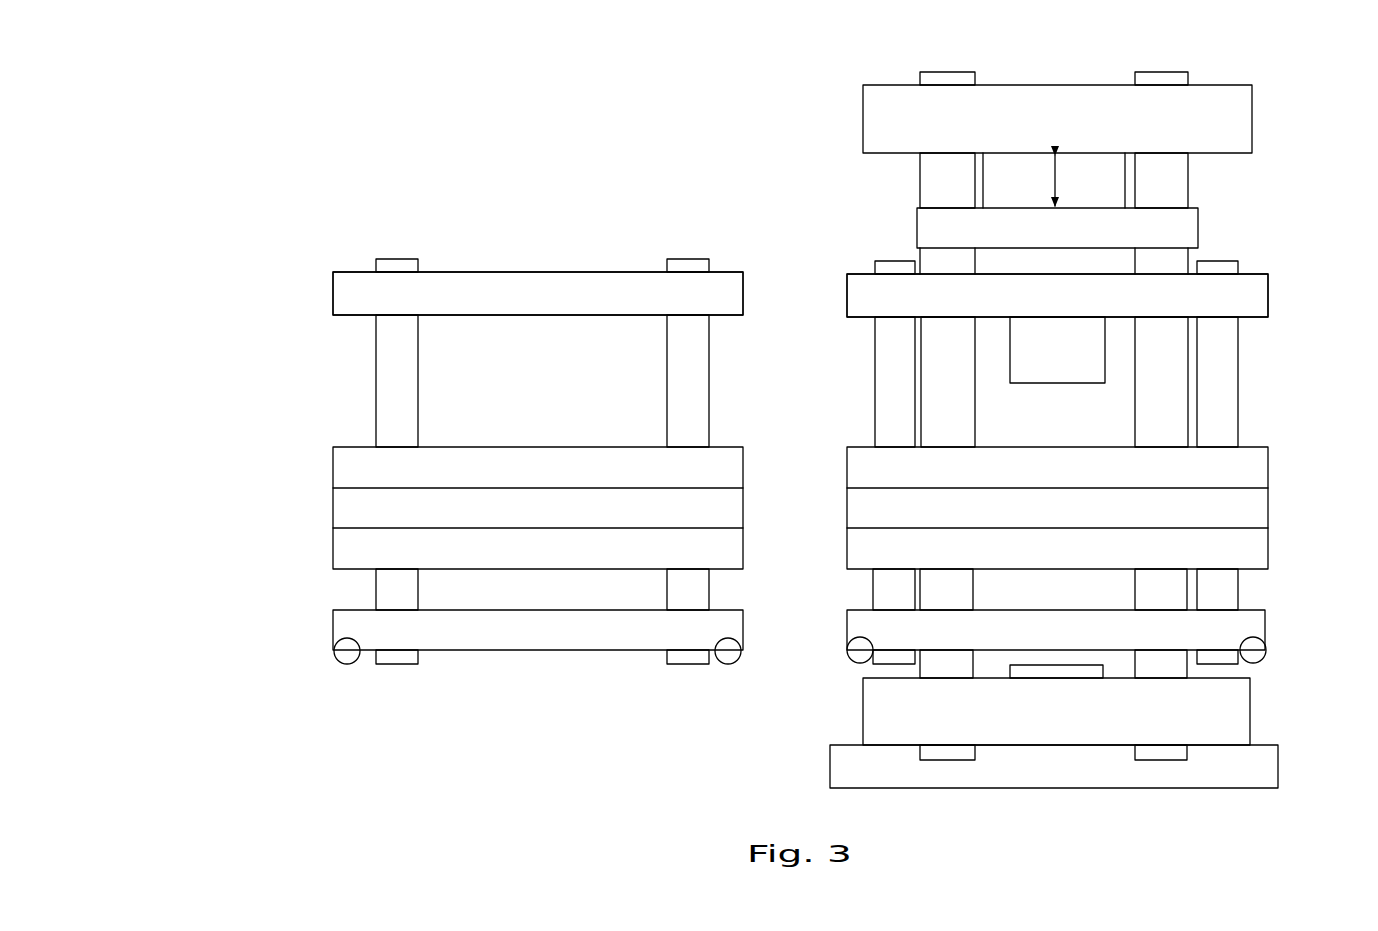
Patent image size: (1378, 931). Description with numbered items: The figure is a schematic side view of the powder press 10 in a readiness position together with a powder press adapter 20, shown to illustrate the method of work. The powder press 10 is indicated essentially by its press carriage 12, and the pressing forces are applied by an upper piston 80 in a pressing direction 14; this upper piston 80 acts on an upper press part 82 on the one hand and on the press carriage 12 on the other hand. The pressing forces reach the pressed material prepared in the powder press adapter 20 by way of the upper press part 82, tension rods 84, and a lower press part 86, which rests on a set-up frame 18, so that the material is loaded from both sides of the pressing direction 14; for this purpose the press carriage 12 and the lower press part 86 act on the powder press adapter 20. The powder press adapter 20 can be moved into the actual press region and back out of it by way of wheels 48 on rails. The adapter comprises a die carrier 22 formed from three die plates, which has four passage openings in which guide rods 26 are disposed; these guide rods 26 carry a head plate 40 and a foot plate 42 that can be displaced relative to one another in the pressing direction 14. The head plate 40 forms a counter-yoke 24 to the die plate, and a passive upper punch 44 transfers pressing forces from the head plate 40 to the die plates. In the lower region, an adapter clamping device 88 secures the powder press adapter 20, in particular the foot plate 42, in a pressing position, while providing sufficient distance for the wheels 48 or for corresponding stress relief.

The powder press 10 is at (822, 150).
The press carriage 12 is at (1185, 230).
The pressing direction 14 is at (1057, 168).
The set-up frame 18 is at (1265, 770).
The powder press adapter 20 is at (338, 680).
The die carrier 22 is at (300, 506).
The counter-yoke 24 is at (377, 285).
The guide rods 26 is at (376, 348).
The head plate 40 is at (347, 293).
The foot plate 42 is at (344, 614).
The upper punch 44 is at (1085, 357).
The wheels 48 is at (342, 652).
The upper piston 80 is at (1125, 163).
The upper press part 82 is at (1237, 110).
The tension rods 84 is at (948, 76).
The lower press part 86 is at (1242, 717).
The adapter clamping device 88 is at (1070, 670).